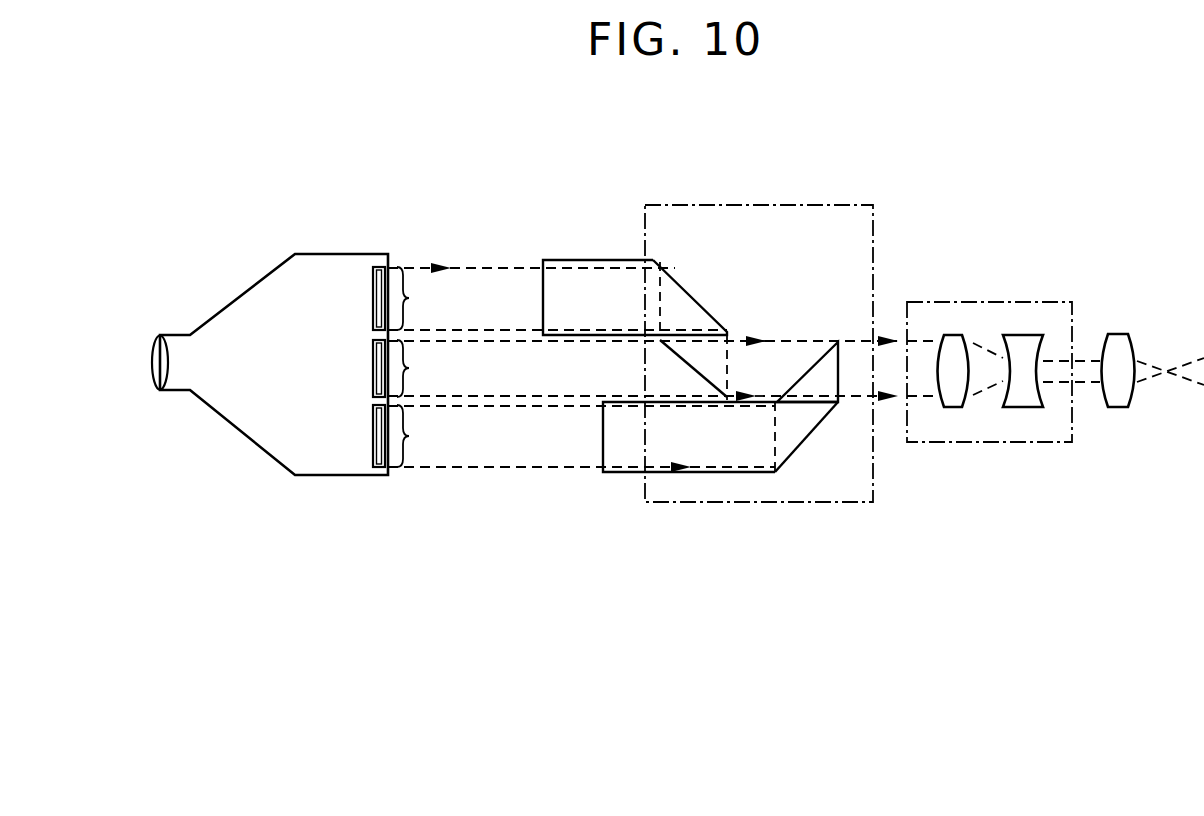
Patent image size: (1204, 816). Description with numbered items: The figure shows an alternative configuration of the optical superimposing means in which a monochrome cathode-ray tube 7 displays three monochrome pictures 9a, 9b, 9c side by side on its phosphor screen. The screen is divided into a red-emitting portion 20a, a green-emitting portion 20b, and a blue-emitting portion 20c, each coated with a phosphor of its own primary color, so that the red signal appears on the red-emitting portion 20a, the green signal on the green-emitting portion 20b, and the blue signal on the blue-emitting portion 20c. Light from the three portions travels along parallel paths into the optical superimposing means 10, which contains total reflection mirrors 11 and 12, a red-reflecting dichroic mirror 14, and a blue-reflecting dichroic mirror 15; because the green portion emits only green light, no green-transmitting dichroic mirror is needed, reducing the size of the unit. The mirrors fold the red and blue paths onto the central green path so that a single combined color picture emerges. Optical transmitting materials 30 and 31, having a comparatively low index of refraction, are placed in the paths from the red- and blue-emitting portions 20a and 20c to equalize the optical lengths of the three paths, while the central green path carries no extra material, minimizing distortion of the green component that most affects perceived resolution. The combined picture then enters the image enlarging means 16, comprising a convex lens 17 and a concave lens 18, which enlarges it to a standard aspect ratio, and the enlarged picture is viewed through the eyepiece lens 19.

The monochrome cathode-ray tube 7 is at (342, 253).
The monochrome picture 9a is at (557, 298).
The monochrome picture 9b is at (642, 368).
The monochrome picture 9c is at (581, 436).
The red-emitting portion 20a is at (373, 305).
The green-emitting portion 20b is at (373, 371).
The blue-emitting portion 20c is at (373, 436).
The optical transmitting material 30 is at (588, 273).
The optical transmitting material 31 is at (612, 463).
The optical superimposing means 10 is at (790, 204).
The total reflection mirror 11 is at (694, 304).
The total reflection mirror 12 is at (820, 422).
The red-reflecting dichroic mirror 14 is at (694, 367).
The blue-reflecting dichroic mirror 15 is at (799, 373).
The image enlarging means 16 is at (1000, 302).
The convex lens 17 is at (953, 408).
The concave lens 18 is at (1022, 408).
The eyepiece lens 19 is at (1118, 334).